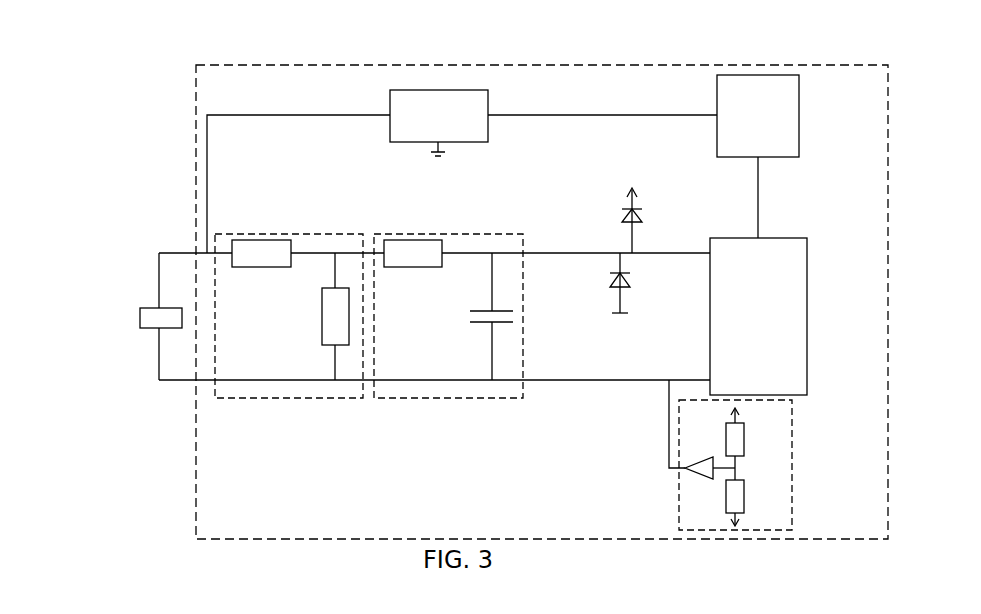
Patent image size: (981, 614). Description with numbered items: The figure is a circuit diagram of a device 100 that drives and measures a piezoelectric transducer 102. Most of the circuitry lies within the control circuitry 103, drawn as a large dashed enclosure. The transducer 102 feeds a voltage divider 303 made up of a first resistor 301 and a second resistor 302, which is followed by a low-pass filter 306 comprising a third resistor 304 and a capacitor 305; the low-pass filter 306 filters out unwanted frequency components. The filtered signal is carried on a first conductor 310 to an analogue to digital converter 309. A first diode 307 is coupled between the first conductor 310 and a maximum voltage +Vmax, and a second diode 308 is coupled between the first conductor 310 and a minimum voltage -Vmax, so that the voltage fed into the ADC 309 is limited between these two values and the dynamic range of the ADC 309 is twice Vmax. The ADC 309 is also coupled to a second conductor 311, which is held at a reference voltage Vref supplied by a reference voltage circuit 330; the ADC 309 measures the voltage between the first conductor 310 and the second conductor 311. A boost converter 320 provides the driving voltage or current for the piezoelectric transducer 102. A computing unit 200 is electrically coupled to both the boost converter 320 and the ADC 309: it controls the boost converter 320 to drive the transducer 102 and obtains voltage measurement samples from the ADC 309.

The device 100 is at (104, 104).
The piezoelectric transducer 102 is at (138, 318).
The control circuitry 103 is at (232, 64).
The computing unit 200 is at (787, 110).
The first resistor 301 is at (262, 250).
The second resistor 302 is at (324, 318).
The voltage divider 303 is at (300, 398).
The third resistor 304 is at (412, 250).
The capacitor 305 is at (476, 322).
The low-pass filter 306 is at (460, 398).
The first diode 307 is at (626, 218).
The second diode 308 is at (616, 284).
The analogue to digital converter 309 is at (807, 316).
The first conductor 310 is at (668, 253).
The second conductor 311 is at (585, 380).
The boost converter 320 is at (488, 143).
The reference voltage circuit 330 is at (793, 455).